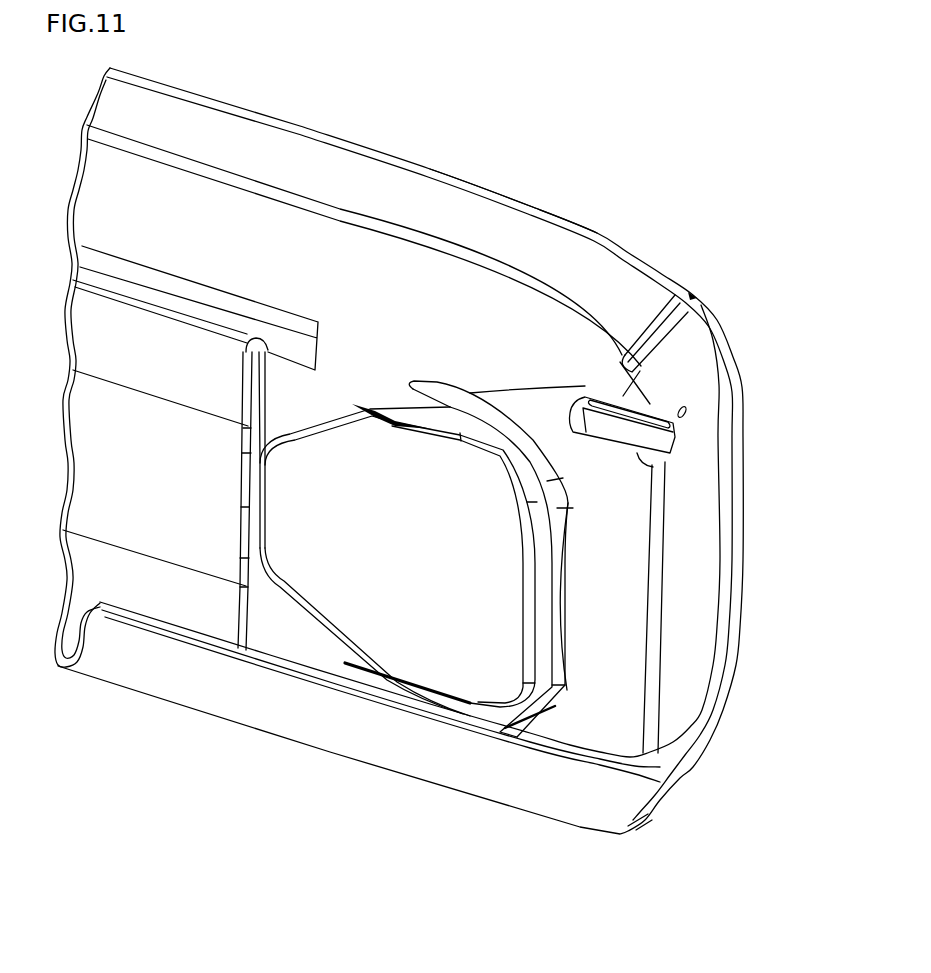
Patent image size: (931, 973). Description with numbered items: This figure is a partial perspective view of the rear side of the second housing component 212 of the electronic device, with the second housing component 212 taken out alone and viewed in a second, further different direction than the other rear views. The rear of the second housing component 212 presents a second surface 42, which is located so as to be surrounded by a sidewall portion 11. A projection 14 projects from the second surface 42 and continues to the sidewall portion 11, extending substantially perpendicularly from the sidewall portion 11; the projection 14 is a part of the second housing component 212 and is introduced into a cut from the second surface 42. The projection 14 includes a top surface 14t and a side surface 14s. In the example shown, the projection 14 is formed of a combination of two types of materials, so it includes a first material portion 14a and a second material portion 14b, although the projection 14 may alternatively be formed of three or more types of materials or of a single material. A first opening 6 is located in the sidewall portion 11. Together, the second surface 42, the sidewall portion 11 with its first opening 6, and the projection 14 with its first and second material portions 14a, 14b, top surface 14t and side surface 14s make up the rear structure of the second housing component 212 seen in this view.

The second housing component 212 is at (512, 132).
The second surface 42 is at (398, 305).
The sidewall portion 11 is at (547, 247).
The projection 14 is at (665, 298).
The first material portion 14a is at (650, 410).
The second material portion 14b is at (613, 405).
The top surface 14t is at (604, 402).
The side surface 14s is at (634, 443).
The first opening 6 is at (681, 406).